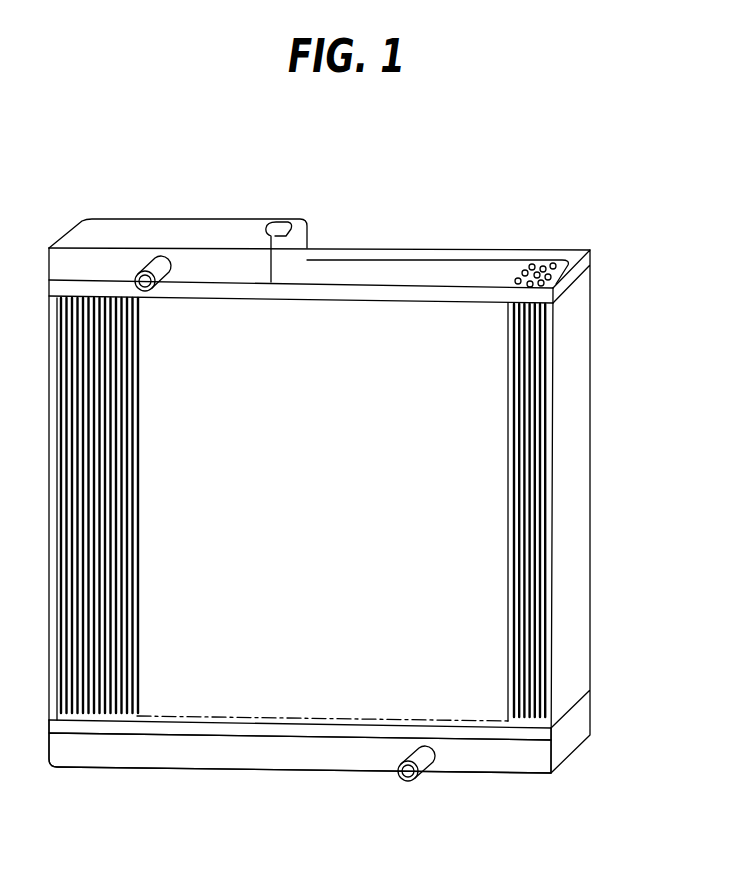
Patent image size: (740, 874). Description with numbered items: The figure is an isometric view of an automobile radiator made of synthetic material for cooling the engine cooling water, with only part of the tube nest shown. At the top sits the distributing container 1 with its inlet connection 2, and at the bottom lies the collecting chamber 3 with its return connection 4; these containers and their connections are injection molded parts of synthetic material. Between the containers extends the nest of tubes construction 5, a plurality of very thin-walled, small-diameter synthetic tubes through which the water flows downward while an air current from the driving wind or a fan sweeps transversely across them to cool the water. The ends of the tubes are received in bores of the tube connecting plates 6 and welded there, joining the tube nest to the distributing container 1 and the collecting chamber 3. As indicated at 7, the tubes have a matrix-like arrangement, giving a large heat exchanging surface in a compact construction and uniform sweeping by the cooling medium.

The distributing container 1 is at (118, 227).
The inlet connection 2 is at (166, 272).
The collecting chamber 3 is at (93, 757).
The return connection 4 is at (424, 772).
The nest of tubes construction 5 is at (143, 483).
The tube connecting plates 6 is at (398, 263).
The matrix-like shape of the tubes 7 is at (549, 248).